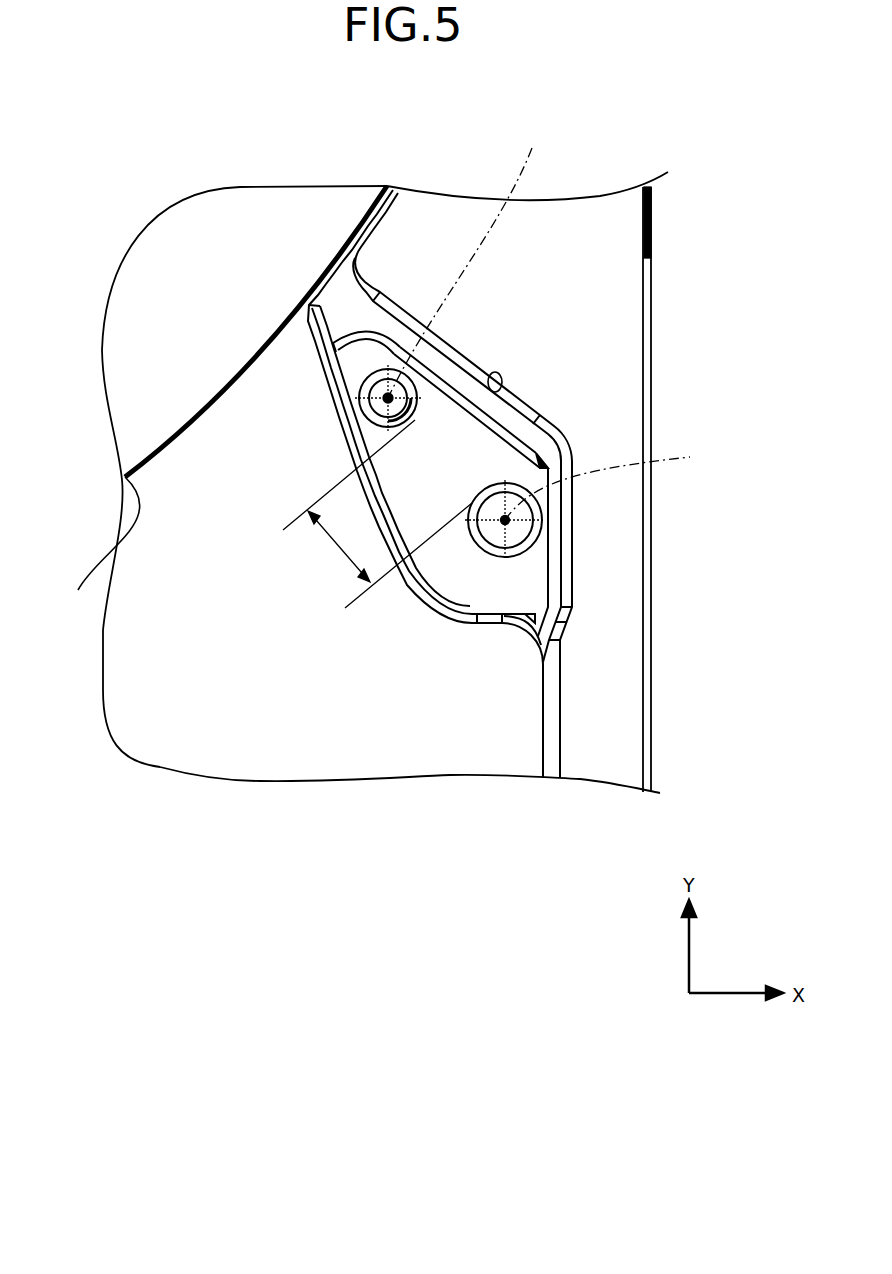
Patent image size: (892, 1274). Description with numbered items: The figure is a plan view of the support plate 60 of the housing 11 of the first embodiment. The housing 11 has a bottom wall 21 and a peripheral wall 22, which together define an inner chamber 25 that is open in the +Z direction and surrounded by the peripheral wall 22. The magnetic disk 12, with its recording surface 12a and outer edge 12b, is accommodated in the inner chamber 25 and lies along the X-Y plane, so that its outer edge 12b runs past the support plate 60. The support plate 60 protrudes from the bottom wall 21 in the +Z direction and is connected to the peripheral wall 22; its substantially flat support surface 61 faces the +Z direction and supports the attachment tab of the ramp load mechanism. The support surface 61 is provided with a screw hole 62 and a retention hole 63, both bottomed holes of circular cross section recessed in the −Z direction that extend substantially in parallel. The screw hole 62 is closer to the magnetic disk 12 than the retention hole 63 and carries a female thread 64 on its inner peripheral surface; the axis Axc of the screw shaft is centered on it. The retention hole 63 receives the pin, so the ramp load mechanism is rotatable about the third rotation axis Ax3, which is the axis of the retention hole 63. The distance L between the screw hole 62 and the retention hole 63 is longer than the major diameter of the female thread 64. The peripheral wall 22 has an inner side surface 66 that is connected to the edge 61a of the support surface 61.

The magnetic disk 12 is at (237, 210).
The recording surface 12a is at (256, 331).
The outer edge 12b is at (100, 547).
The housing 11 is at (655, 231).
The peripheral wall 22 is at (623, 683).
The inner chamber 25 is at (317, 774).
The bottom wall 21 is at (443, 768).
The support plate 60 is at (528, 582).
The support surface 61 is at (440, 399).
The edge of the support surface 61a is at (550, 492).
The inner side surface 66 is at (492, 373).
The screw hole 62 is at (400, 387).
The female thread 64 is at (388, 398).
The retention hole 63 is at (543, 533).
The axis of the screw shaft Axc is at (468, 259).
The third rotation axis Ax3 is at (619, 484).
The distance between the screw hole and the retention hole L is at (377, 514).